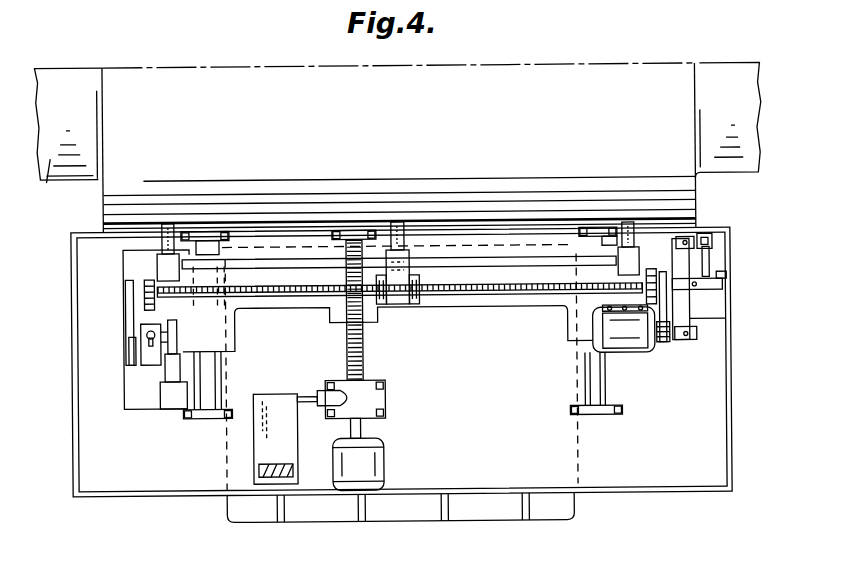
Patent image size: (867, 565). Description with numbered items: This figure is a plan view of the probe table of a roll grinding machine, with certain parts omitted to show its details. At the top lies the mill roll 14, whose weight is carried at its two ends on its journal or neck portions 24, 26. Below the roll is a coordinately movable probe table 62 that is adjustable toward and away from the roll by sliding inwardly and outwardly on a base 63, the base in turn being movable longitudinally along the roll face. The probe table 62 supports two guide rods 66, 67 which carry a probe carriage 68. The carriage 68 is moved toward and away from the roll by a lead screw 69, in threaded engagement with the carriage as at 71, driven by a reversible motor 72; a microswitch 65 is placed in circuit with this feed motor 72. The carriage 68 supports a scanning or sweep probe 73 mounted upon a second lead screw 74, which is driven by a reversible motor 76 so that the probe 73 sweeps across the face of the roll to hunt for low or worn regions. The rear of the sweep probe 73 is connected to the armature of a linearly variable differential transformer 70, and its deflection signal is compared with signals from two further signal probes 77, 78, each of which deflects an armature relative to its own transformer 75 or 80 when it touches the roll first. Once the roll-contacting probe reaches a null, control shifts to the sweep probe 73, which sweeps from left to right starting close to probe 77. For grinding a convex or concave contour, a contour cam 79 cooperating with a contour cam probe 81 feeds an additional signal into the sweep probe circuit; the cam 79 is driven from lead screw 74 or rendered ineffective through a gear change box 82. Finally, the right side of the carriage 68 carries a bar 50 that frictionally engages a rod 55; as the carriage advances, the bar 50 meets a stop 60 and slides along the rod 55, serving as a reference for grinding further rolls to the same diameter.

The roll 14 is at (695, 204).
The journal portion 24 is at (65, 150).
The journal portion 26 is at (734, 144).
The bar 50 is at (712, 292).
The rod 55 is at (690, 323).
The stop 60 is at (710, 261).
The probe table 62 is at (715, 418).
The base 63 is at (562, 508).
The microswitch 65 is at (727, 278).
The guide rod 66 is at (205, 394).
The guide rod 67 is at (596, 390).
The probe carriage 68 is at (497, 298).
The lead screw 69 is at (361, 351).
The linearly variable differential transformer 70 is at (400, 272).
The threaded engagement 71 is at (345, 311).
The reversible motor 72 is at (368, 470).
The sweep probe 73 is at (400, 222).
The lead screw 74 is at (455, 288).
The transformer 75 is at (166, 265).
The reversible motor 76 is at (638, 345).
The signal probe 77 is at (170, 222).
The signal probe 78 is at (630, 224).
The contour cam 79 is at (177, 336).
The transformer 80 is at (637, 260).
The contour cam probe 81 is at (178, 366).
The gear change box 82 is at (148, 360).